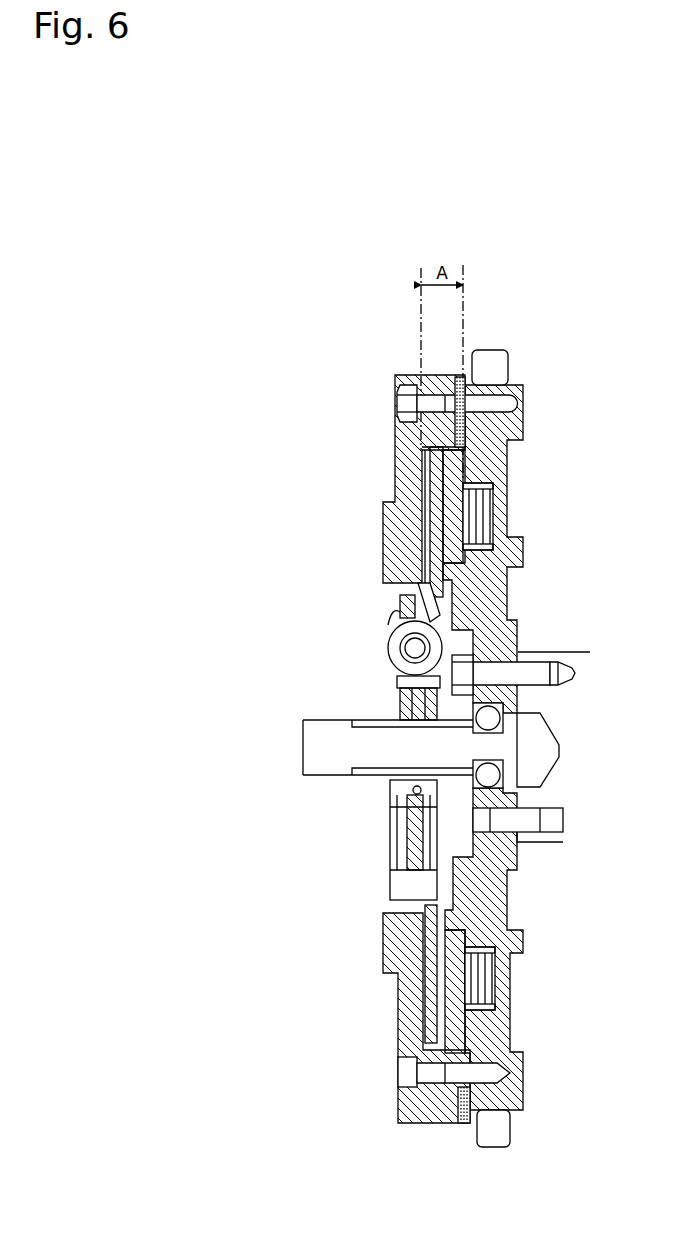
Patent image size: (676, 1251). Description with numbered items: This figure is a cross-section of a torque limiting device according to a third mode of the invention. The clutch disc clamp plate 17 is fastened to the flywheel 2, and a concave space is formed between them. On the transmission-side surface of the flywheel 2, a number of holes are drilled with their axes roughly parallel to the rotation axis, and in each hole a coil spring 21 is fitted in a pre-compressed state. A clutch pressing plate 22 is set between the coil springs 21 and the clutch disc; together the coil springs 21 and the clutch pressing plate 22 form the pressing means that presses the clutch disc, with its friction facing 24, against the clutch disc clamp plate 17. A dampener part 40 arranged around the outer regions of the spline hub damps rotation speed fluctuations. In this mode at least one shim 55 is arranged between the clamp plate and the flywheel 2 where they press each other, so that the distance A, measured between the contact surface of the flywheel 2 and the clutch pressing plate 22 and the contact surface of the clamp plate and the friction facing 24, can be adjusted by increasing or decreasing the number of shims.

The flywheel 2 is at (510, 420).
The clutch disc clamp plate 17 is at (390, 447).
The coil spring 21 is at (480, 520).
The clutch pressing plate 22 is at (457, 473).
The friction facing 24 is at (420, 500).
The dampener part 40 is at (357, 645).
The shim 55 is at (460, 377).